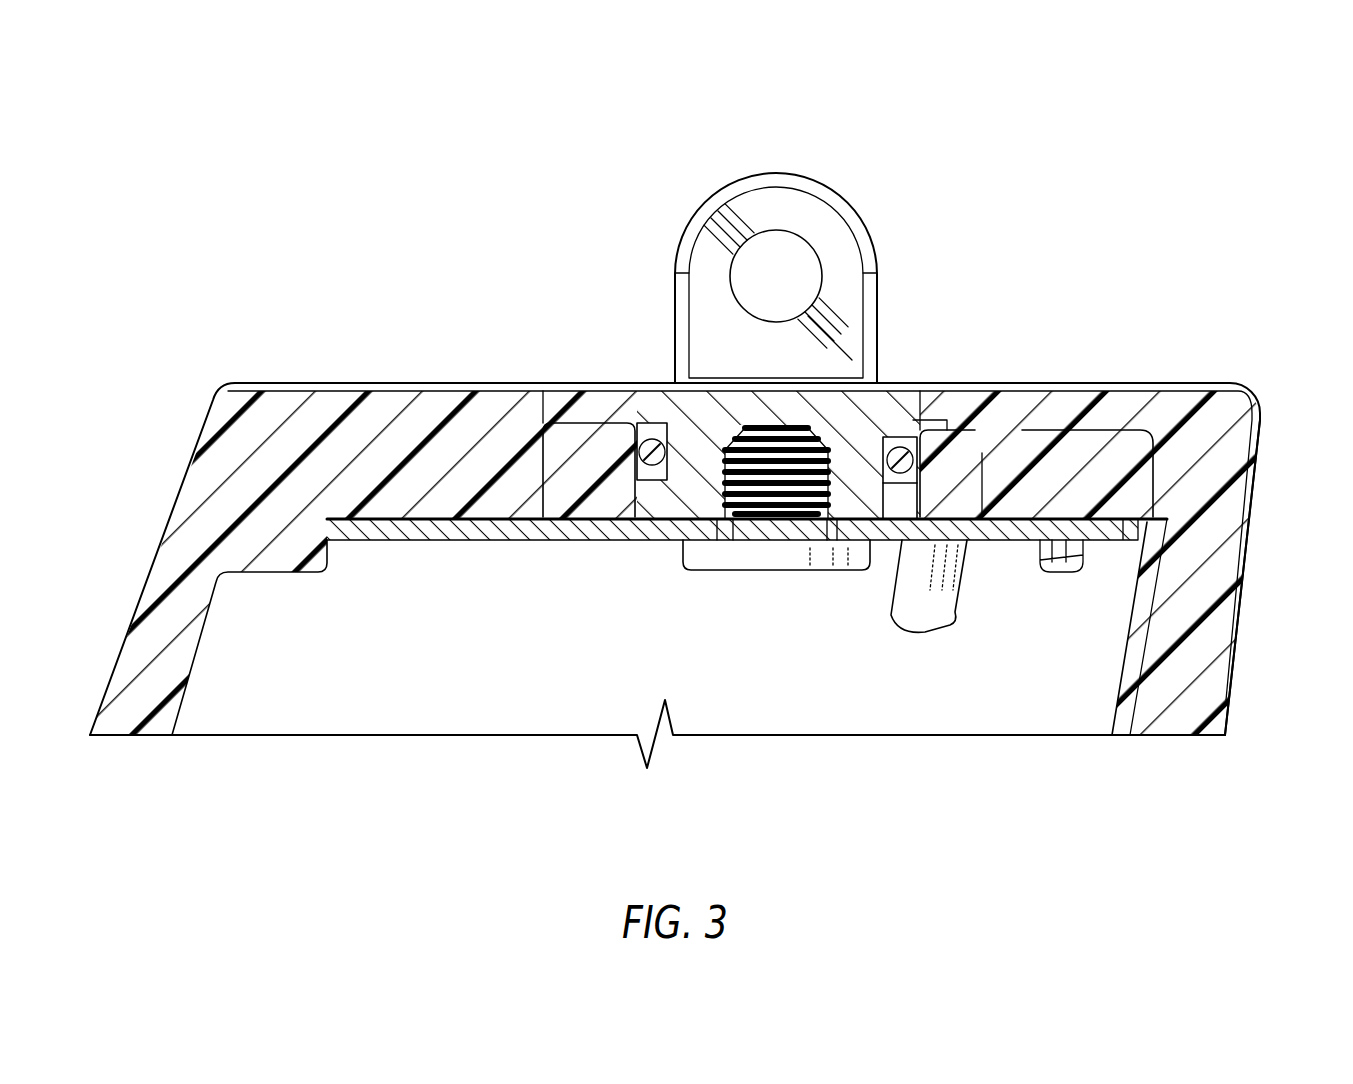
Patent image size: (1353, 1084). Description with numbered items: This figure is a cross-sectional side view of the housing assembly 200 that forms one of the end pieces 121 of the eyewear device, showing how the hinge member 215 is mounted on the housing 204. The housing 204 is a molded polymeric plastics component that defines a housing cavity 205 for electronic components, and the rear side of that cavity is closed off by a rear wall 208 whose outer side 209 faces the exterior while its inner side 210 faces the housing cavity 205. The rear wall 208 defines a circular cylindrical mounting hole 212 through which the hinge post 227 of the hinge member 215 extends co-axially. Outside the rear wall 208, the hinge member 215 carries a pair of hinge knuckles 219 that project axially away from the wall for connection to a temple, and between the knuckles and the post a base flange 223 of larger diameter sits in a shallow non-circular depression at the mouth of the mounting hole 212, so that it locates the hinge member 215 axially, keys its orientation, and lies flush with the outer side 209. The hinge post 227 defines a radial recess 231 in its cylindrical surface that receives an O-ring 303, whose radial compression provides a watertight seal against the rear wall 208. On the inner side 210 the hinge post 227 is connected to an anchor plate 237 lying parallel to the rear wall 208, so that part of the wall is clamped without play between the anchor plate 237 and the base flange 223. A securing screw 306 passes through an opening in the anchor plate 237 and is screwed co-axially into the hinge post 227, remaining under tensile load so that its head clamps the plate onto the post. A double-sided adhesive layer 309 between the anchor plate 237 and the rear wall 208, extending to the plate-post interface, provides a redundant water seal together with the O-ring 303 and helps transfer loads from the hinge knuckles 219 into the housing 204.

The housing assembly 200 is at (676, 542).
The end piece 121 is at (676, 542).
The housing 204 is at (1212, 683).
The housing cavity 205 is at (502, 700).
The rear wall 208 is at (1072, 402).
The outer side 209 is at (676, 542).
The inner side 210 is at (347, 605).
The mounting hole 212 is at (612, 503).
The hinge member 215 is at (786, 233).
The hinge knuckles 219 is at (747, 213).
The base flange 223 is at (600, 407).
The hinge post 227 is at (848, 465).
The radial recess 231 is at (892, 505).
The anchor plate 237 is at (653, 540).
The O-ring 303 is at (902, 465).
The securing screw 306 is at (758, 552).
The double-sided adhesive layer 309 is at (548, 540).